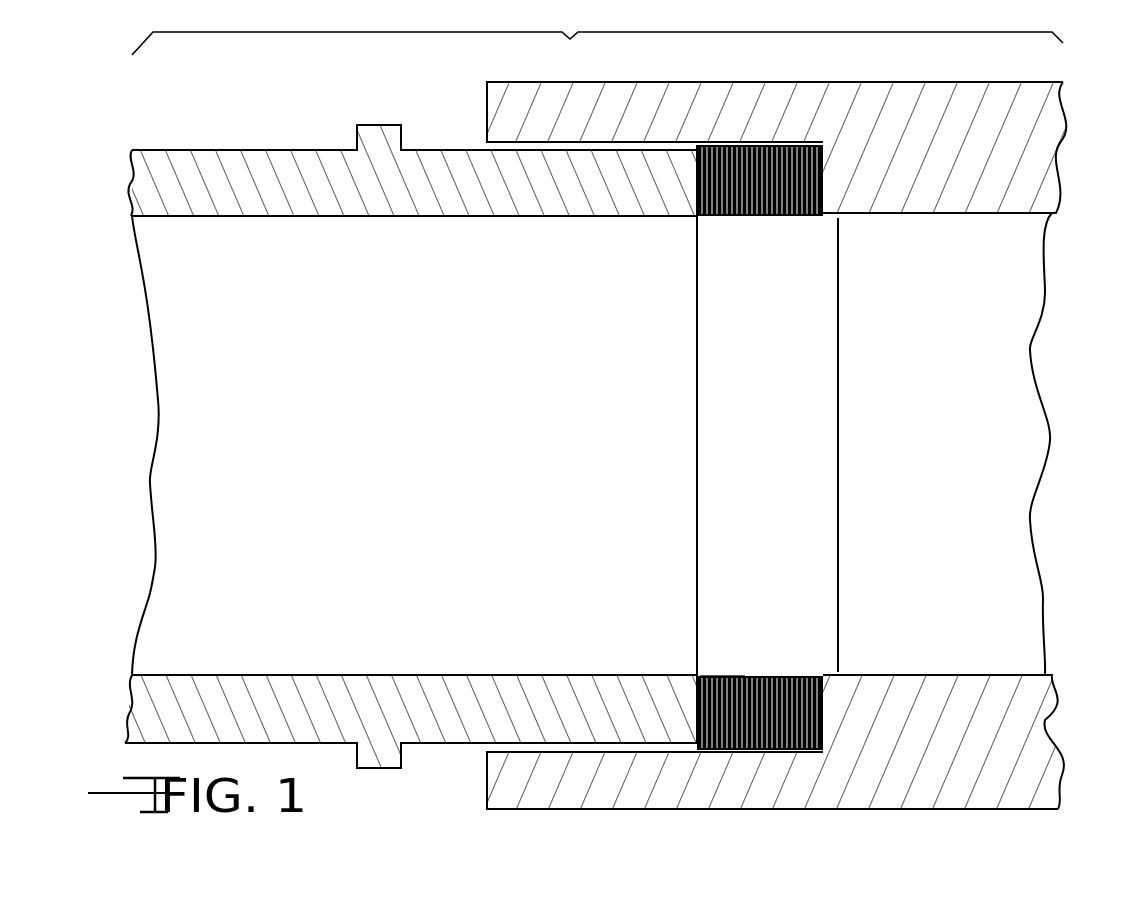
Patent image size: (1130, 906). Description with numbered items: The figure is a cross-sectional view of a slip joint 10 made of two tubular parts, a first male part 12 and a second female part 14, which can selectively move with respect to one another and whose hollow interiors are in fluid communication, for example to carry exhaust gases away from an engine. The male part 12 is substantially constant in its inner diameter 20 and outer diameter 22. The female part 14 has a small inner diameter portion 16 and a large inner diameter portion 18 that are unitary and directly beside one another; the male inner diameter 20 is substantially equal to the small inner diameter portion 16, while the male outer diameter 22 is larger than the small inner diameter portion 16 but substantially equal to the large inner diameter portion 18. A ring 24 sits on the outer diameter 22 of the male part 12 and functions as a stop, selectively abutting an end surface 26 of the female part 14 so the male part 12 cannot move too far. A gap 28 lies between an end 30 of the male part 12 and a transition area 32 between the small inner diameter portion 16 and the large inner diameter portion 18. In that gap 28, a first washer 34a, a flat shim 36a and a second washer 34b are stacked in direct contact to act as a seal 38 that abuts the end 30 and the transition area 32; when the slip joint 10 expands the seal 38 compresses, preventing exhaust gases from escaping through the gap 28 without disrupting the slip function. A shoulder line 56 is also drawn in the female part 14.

The slip joint 10 is at (597, 49).
The first male part 12 is at (260, 135).
The second female part 14 is at (1050, 81).
The small inner diameter portion 16 is at (910, 684).
The large inner diameter portion 18 is at (537, 756).
The inner diameter 20 is at (173, 222).
The outer diameter 22 is at (170, 148).
The ring 24 is at (362, 125).
The end surface 26 is at (487, 110).
The gap 28 is at (757, 144).
The end 30 is at (688, 178).
The transition area 32 is at (823, 718).
The first washer 34a is at (697, 676).
The second washer 34b is at (725, 675).
The flat shim 36a is at (710, 675).
The seal 38 is at (863, 218).
The fitting shoulder 56 is at (864, 445).